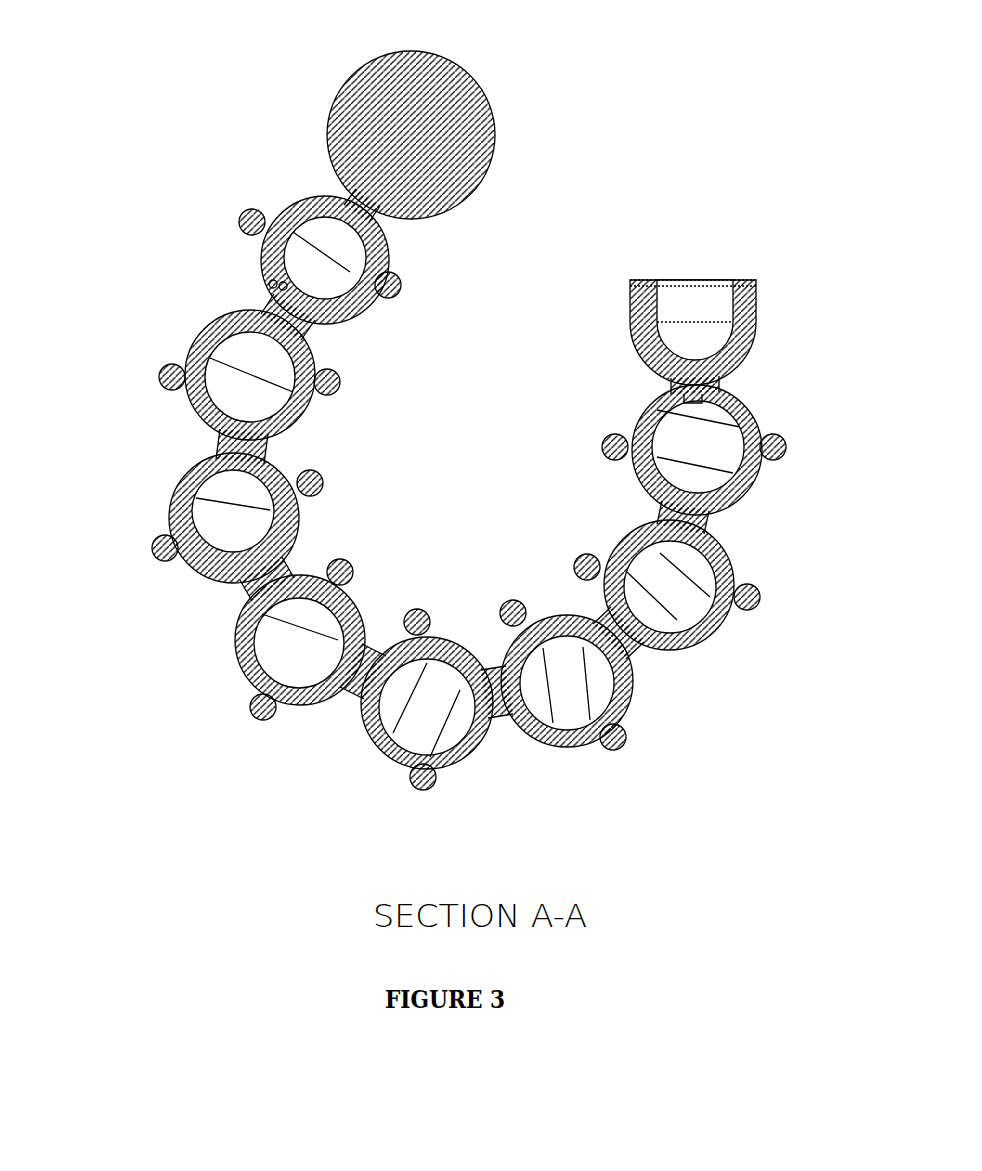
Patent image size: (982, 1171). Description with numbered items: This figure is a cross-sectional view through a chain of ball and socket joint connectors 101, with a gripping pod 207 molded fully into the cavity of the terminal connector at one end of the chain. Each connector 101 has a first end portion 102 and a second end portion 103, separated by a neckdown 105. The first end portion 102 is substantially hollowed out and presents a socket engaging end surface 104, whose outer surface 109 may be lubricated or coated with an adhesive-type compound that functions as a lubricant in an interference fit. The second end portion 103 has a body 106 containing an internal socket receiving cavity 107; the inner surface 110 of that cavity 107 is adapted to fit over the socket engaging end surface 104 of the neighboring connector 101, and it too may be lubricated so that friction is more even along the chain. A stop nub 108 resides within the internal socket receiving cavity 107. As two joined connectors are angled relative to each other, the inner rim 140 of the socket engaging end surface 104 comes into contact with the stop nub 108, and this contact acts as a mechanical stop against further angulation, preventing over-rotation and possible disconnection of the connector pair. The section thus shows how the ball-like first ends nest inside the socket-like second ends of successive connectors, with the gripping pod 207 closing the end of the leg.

The ball and socket joint connector 101 is at (630, 430).
The first end portion 102 is at (630, 293).
The second end portion 103 is at (623, 477).
The socket engaging end surface 104 is at (630, 333).
The neckdown 105 is at (657, 377).
The body 106 is at (640, 403).
The internal socket receiving cavity 107 is at (277, 282).
The stop nub 108 is at (282, 288).
The outer surface 109 is at (628, 292).
The inner surface 110 is at (316, 310).
The inner rim 140 is at (196, 545).
The gripping pod 207 is at (440, 64).